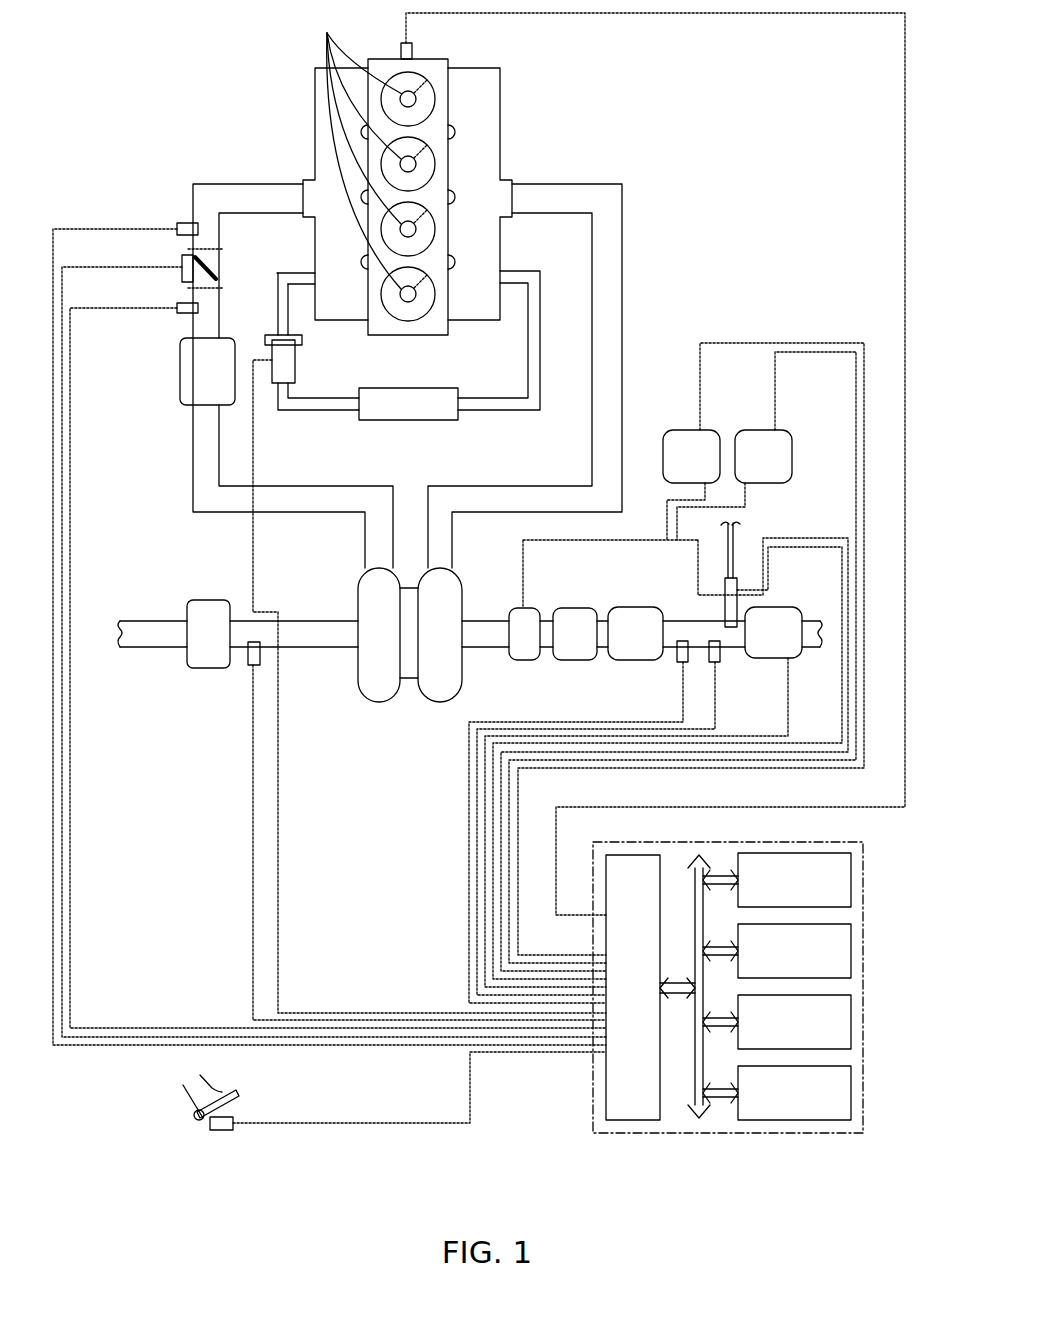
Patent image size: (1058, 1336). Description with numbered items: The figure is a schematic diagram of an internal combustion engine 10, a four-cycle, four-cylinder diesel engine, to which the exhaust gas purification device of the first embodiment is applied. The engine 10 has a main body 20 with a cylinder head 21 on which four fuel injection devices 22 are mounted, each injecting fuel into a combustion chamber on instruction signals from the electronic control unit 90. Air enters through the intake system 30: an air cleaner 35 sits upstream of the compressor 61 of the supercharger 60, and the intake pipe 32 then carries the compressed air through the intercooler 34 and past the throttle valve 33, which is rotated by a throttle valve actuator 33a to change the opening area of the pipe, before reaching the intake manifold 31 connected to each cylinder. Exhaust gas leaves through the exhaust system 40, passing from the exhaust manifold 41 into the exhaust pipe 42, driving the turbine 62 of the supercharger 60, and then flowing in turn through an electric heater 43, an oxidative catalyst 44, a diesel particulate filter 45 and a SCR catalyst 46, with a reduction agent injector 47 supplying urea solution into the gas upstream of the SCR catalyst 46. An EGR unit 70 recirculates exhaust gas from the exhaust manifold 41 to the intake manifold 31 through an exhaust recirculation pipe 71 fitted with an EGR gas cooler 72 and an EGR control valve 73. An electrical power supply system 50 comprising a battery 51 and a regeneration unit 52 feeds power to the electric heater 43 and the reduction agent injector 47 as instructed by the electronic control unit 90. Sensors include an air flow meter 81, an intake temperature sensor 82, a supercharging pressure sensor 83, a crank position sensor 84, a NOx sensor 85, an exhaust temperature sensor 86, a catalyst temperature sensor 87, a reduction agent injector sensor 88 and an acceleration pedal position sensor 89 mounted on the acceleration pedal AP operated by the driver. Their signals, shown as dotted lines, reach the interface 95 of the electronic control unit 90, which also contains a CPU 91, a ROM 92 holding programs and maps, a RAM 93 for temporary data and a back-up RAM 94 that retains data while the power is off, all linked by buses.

The internal combustion engine 10 is at (120, 70).
The main body 20 is at (278, 56).
The cylinder head 21 is at (408, 337).
The fuel injection devices 22 is at (358, 151).
The intake system 30 is at (157, 162).
The intake manifold 31 is at (314, 120).
The intake pipe 32 is at (245, 183).
The throttle valve 33 is at (217, 268).
The throttle valve actuator 33a is at (175, 279).
The intercooler 34 is at (180, 370).
The air cleaner 35 is at (208, 600).
The exhaust system 40 is at (660, 160).
The exhaust manifold 41 is at (500, 118).
The exhaust pipe 42 is at (568, 183).
The electric heater 43 is at (523, 662).
The oxidative catalyst 44 is at (575, 662).
The diesel particulate filter 45 is at (636, 662).
The SCR catalyst 46 is at (765, 660).
The reduction agent injector 47 is at (726, 578).
The electrical power supply system 50 is at (798, 416).
The battery 51 is at (678, 429).
The regeneration unit 52 is at (775, 429).
The supercharger 60 is at (367, 754).
The compressor 61 is at (378, 704).
The turbine 62 is at (440, 704).
The EGR unit 70 is at (524, 418).
The exhaust recirculation pipe 71 is at (497, 397).
The EGR gas cooler 72 is at (408, 422).
The EGR control valve 73 is at (297, 363).
The air flow meter 81 is at (250, 668).
The intake temperature sensor 82 is at (175, 313).
The supercharging pressure sensor 83 is at (175, 233).
The crank position sensor 84 is at (398, 42).
The NOx sensor 85 is at (688, 664).
The exhaust temperature sensor 86 is at (720, 664).
The catalyst temperature sensor 87 is at (785, 662).
The reduction agent injector sensor 88 is at (738, 597).
The acceleration pedal position sensor 89 is at (222, 1132).
The acceleration pedal AP is at (236, 1095).
The electronic control unit 90 is at (838, 1140).
The CPU 91 is at (851, 880).
The ROM 92 is at (851, 951).
The RAM 93 is at (851, 1022).
The back-up RAM 94 is at (851, 1093).
The interface 95 is at (633, 1122).